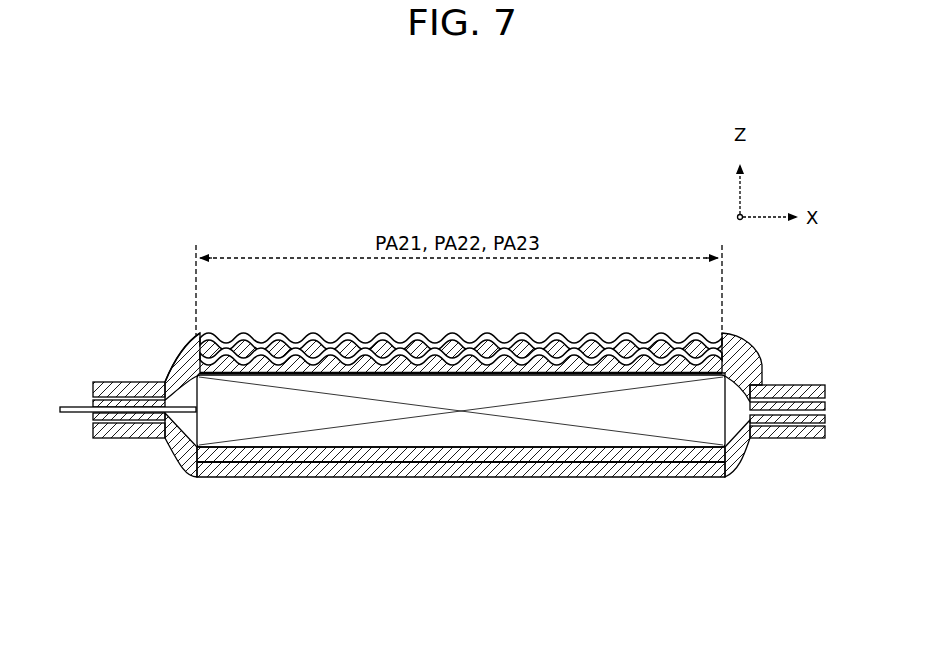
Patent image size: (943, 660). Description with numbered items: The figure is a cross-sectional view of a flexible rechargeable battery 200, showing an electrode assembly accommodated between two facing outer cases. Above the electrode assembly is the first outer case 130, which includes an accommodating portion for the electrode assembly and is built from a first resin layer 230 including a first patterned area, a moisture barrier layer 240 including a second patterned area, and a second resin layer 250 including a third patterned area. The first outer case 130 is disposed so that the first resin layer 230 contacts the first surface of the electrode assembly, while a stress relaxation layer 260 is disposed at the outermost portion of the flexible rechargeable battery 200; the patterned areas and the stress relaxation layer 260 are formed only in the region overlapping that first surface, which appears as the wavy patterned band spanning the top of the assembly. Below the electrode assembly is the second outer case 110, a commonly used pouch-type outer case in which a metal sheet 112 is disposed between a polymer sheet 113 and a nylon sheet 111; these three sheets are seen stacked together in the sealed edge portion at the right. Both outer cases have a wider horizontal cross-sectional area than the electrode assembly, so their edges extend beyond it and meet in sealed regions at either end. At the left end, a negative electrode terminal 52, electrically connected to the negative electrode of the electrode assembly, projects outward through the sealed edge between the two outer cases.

The flexible rechargeable battery 200 is at (482, 143).
The negative electrode terminal 52 is at (75, 415).
The second outer case 110 is at (789, 516).
The nylon sheet 111 is at (820, 440).
The metal sheet 112 is at (798, 438).
The polymer sheet 113 is at (775, 440).
The first outer case 130 is at (784, 328).
The first resin layer 230 is at (208, 340).
The moisture barrier layer 240 is at (178, 343).
The second resin layer 250 is at (165, 348).
The stress relaxation layer 260 is at (651, 335).